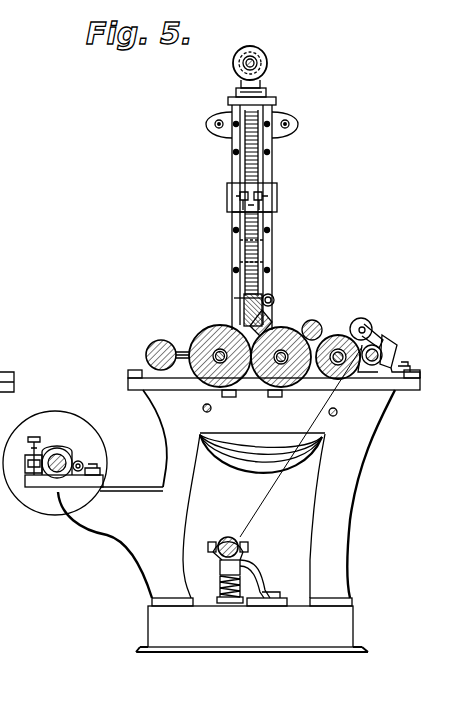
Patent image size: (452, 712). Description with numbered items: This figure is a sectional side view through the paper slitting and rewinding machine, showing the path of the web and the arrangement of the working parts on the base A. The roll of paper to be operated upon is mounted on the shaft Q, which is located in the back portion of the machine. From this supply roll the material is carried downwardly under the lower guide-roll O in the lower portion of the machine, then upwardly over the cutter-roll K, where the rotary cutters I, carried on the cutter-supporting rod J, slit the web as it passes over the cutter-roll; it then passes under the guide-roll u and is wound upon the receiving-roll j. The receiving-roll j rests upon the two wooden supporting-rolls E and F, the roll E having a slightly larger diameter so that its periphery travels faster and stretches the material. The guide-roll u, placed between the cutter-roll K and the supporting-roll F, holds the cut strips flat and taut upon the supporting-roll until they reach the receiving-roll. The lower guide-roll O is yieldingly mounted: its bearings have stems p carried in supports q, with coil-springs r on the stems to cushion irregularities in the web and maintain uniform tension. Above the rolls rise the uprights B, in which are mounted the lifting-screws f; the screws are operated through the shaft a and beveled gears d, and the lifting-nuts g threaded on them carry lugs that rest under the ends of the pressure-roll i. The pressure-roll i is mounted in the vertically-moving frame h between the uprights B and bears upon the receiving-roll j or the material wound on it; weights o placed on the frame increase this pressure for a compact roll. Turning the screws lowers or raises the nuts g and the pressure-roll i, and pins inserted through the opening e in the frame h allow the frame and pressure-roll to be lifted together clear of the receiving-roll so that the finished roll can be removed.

The shaft for lifting-screws a is at (253, 60).
The beveled gears d is at (261, 63).
The opening in frame e is at (263, 79).
The uprights B is at (232, 150).
The lifting-screws f is at (255, 148).
The lifting-nuts g is at (252, 196).
The frame h is at (272, 220).
The pressure-roll i is at (272, 298).
The receiving-roll j is at (272, 312).
The supporting-roll E is at (220, 325).
The supporting-roll F is at (284, 327).
The guide-roll u is at (312, 320).
The cutter-roll K is at (338, 335).
The rotary cutters I is at (362, 319).
The cutter-supporting rod J is at (393, 350).
The base A is at (210, 511).
The weights o is at (228, 540).
The supports q is at (225, 575).
The coil-springs r is at (221, 588).
The stems p is at (218, 600).
The feed-roll shaft Q is at (215, 543).